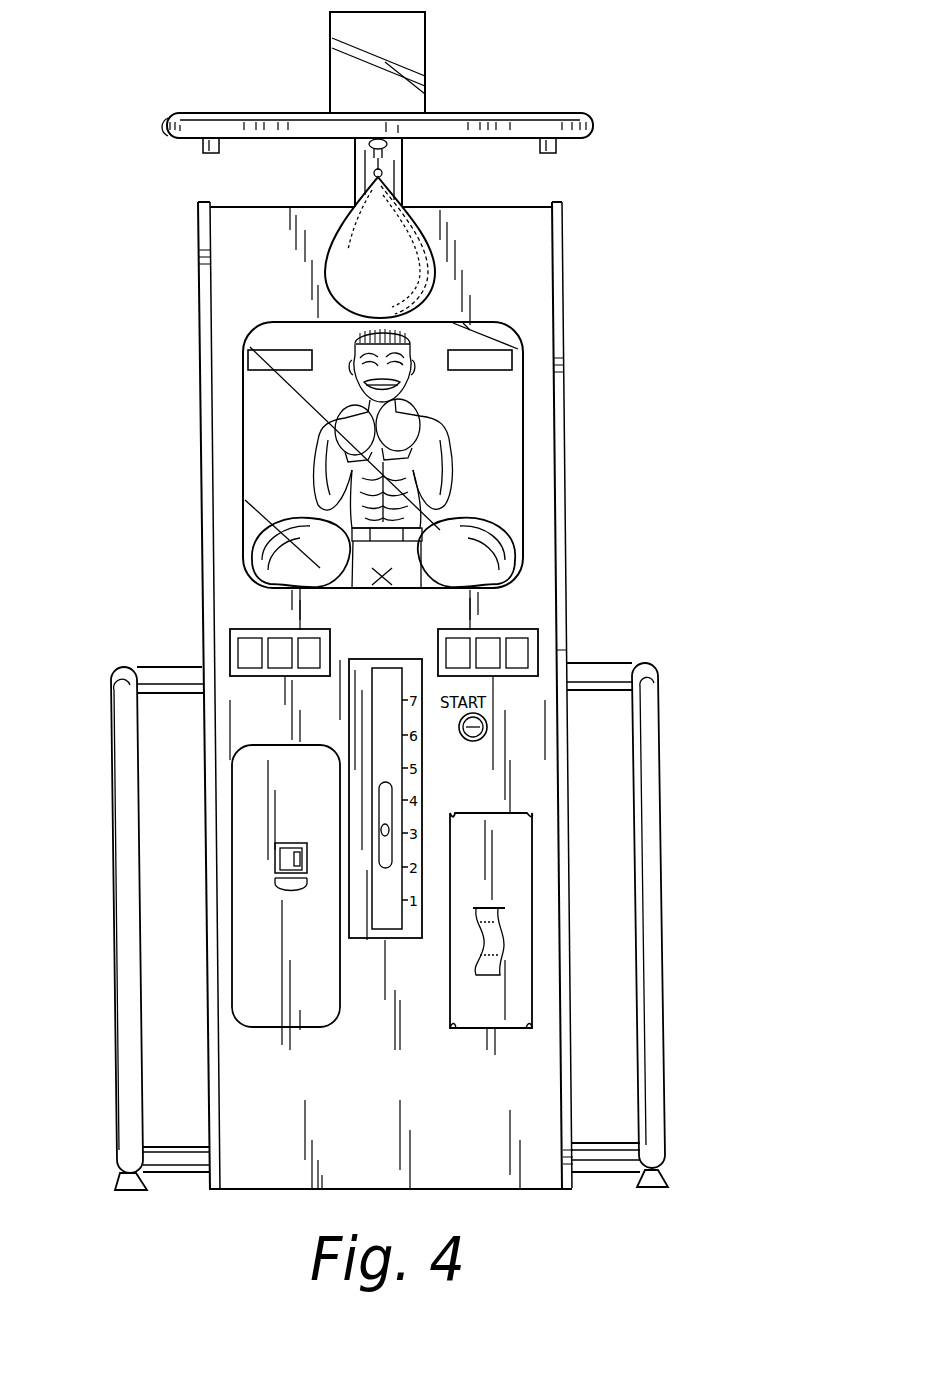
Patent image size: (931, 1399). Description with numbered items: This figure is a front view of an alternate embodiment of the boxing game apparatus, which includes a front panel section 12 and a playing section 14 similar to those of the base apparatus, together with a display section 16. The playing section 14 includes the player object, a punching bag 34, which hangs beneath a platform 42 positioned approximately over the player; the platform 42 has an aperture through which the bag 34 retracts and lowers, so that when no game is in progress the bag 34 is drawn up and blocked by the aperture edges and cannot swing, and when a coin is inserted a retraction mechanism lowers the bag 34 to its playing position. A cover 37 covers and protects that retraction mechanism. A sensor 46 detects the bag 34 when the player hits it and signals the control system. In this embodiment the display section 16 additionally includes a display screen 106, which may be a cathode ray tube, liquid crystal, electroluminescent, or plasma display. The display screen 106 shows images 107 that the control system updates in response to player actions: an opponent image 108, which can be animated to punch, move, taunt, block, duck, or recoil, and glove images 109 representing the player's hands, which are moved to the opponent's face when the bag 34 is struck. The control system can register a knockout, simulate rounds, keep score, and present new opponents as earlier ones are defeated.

The front panel section 12 is at (487, 765).
The playing section 14 is at (628, 118).
The display section 16 is at (517, 297).
The punching bag 34 is at (360, 263).
The cover 37 is at (412, 25).
The platform 42 is at (167, 127).
The sensor 46 is at (208, 137).
The display screen 106 is at (500, 470).
The images 107 is at (383, 458).
The opponent image 108 is at (330, 457).
The glove images 109 is at (275, 560).